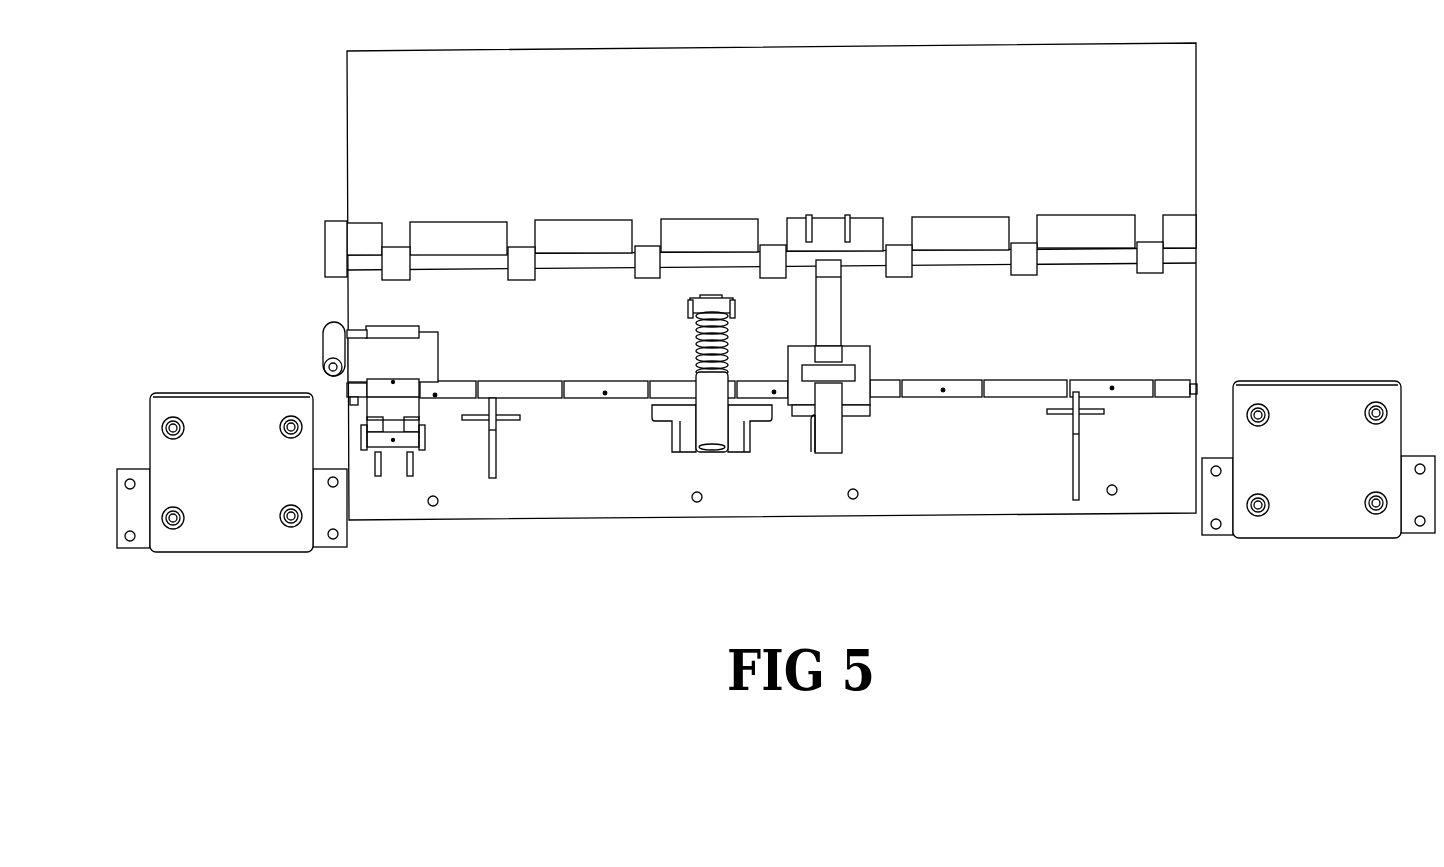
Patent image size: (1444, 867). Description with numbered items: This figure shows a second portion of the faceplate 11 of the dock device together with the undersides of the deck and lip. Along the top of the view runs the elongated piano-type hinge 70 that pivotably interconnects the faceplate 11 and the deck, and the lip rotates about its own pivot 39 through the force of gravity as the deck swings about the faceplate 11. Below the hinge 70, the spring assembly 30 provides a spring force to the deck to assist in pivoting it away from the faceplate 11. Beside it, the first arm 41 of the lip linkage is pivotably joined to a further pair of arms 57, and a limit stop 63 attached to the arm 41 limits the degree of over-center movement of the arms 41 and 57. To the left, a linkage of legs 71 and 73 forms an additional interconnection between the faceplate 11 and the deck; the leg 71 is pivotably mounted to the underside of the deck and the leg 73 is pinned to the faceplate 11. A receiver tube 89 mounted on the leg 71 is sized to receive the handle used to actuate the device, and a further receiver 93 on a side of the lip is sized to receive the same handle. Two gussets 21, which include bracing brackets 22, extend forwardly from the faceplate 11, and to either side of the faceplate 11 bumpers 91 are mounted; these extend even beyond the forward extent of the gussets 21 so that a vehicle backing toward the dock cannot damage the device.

The faceplate 11 is at (587, 525).
The gussets 21 is at (496, 463).
The bracing brackets 22 is at (512, 421).
The spring assembly 30 is at (688, 348).
The pivot 39 is at (1068, 255).
The first arm 41 is at (829, 312).
The arms 57 is at (862, 390).
The limit stop 63 is at (848, 372).
The piano-type hinge 70 is at (962, 388).
The leg 71 is at (410, 358).
The leg 73 is at (395, 411).
The receiver tube 89 is at (333, 342).
The bumpers 91 is at (233, 533).
The receiver 93 is at (338, 244).